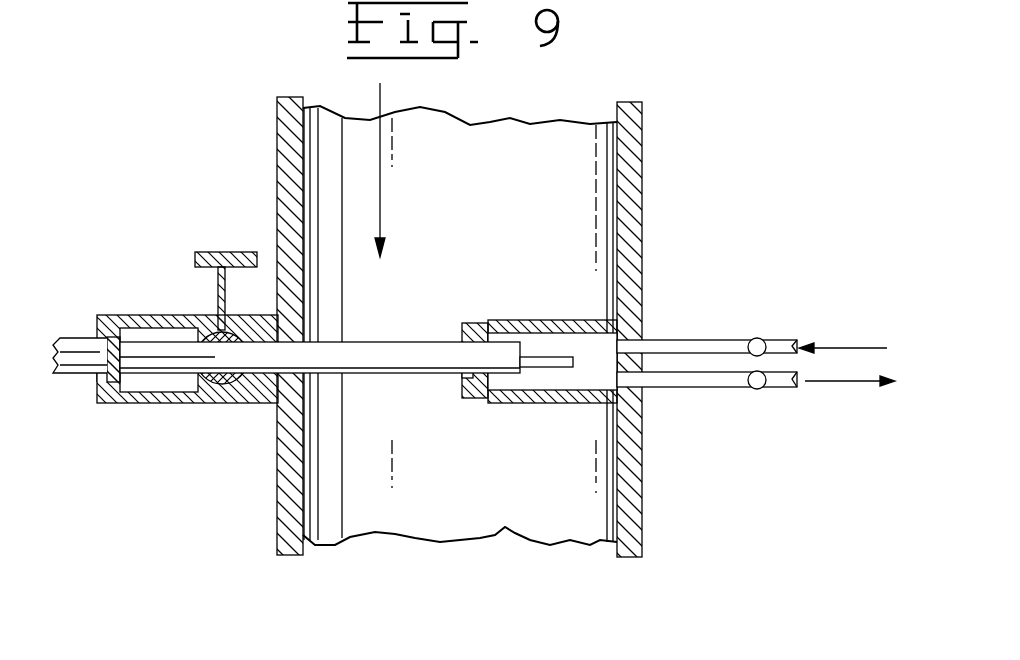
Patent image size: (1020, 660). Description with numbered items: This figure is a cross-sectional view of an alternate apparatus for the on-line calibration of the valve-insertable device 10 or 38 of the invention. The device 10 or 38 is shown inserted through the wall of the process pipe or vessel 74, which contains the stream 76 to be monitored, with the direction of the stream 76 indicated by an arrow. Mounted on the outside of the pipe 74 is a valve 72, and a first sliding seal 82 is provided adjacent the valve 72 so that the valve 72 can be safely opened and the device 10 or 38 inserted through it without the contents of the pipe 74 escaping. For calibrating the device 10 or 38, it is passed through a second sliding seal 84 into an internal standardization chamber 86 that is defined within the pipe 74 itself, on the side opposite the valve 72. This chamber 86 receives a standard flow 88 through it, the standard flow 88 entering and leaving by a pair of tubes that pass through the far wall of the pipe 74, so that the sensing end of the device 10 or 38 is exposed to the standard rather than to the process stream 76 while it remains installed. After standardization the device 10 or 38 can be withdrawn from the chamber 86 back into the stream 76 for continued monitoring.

The valve-insertable device 10 is at (525, 188).
The valve-insertable device 38 is at (552, 345).
The valve 72 is at (222, 385).
The process pipe or vessel 74 is at (300, 168).
The stream 76 is at (382, 97).
The first sliding seal 82 is at (100, 315).
The second sliding seal 84 is at (472, 398).
The internal standardization chamber 86 is at (540, 403).
The standard flow 88 is at (845, 348).